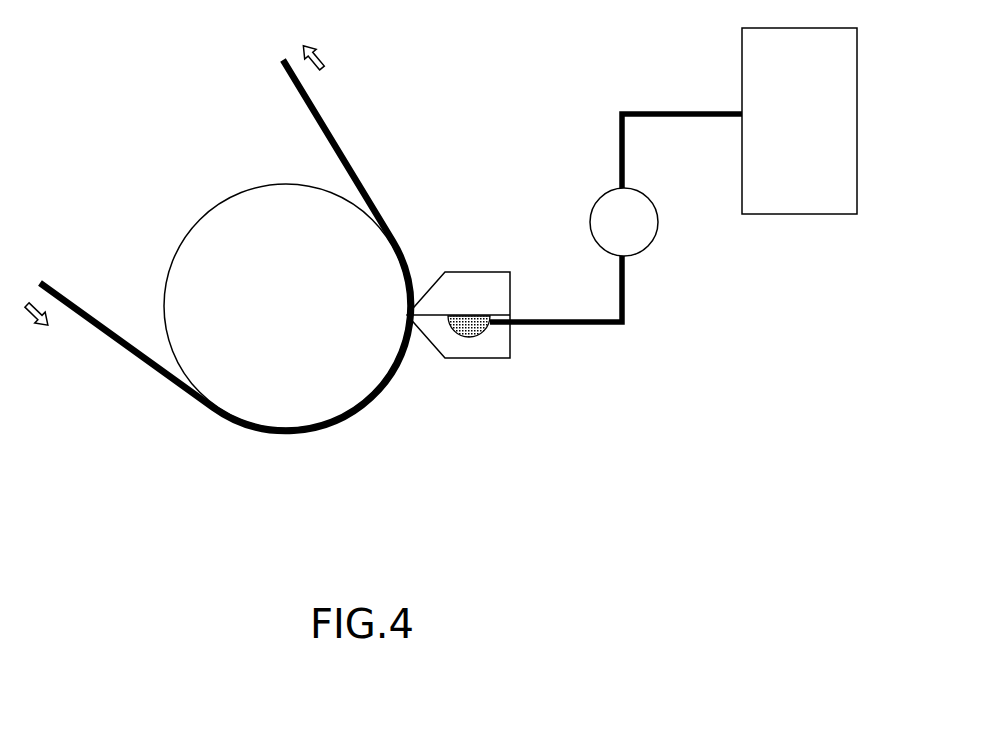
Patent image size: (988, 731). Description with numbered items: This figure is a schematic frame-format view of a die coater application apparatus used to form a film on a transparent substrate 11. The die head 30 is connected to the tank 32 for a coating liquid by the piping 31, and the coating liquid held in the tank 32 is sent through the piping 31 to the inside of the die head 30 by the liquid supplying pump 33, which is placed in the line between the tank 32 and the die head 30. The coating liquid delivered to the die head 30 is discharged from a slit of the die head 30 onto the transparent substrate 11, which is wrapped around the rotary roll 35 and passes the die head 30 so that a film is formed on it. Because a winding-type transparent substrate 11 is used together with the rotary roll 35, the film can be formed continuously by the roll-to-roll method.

The transparent substrate 11 is at (132, 350).
The rotary roll 35 is at (285, 373).
The die head 30 is at (490, 345).
The piping 31 is at (623, 311).
The tank for a coating liquid 32 is at (790, 172).
The liquid supplying pump 33 is at (603, 232).